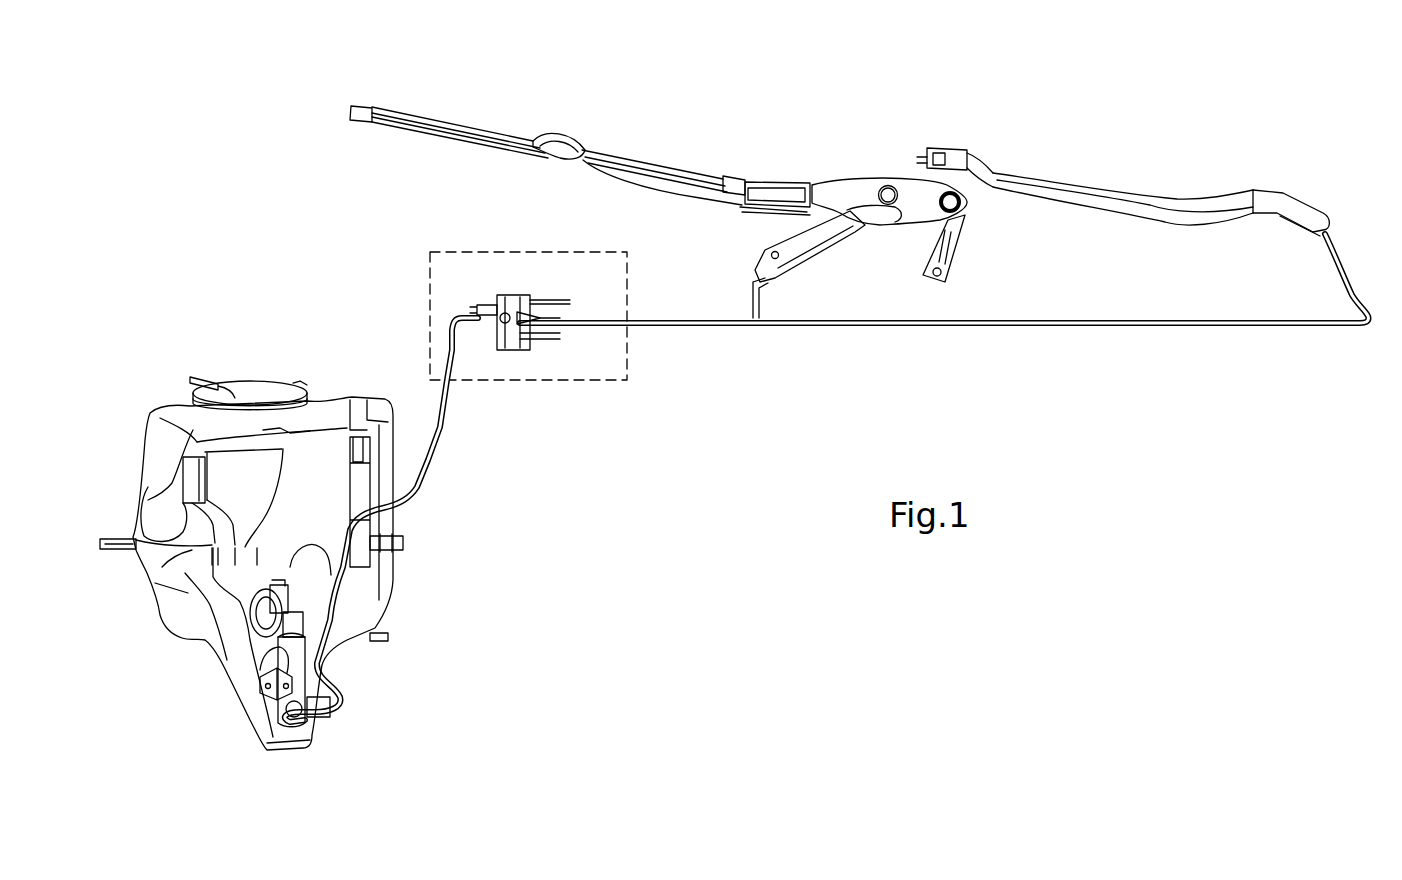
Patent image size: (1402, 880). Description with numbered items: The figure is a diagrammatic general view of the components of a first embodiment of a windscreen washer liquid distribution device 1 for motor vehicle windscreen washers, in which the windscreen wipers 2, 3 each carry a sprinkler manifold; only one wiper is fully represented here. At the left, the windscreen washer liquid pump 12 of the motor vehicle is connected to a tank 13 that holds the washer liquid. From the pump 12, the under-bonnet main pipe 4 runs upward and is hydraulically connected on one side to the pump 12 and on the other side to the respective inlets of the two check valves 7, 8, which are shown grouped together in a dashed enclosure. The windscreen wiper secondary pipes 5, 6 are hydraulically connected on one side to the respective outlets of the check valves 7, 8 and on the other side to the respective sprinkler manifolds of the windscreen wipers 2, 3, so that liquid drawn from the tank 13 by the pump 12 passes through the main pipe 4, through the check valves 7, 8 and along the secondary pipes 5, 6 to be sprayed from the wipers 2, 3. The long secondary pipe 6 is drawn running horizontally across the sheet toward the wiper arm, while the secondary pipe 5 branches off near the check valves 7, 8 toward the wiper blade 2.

The windscreen washer liquid distribution device 1 is at (655, 455).
The windscreen wiper 2 is at (570, 133).
The windscreen wiper 3 is at (957, 141).
The under-bonnet main pipe 4 is at (443, 425).
The windscreen wiper secondary pipe 5 is at (752, 298).
The windscreen wiper secondary pipe 6 is at (1017, 325).
The check valve 7 is at (528, 290).
The check valve 8 is at (510, 295).
The windscreen washer liquid pump 12 is at (328, 710).
The tank 13 is at (265, 393).